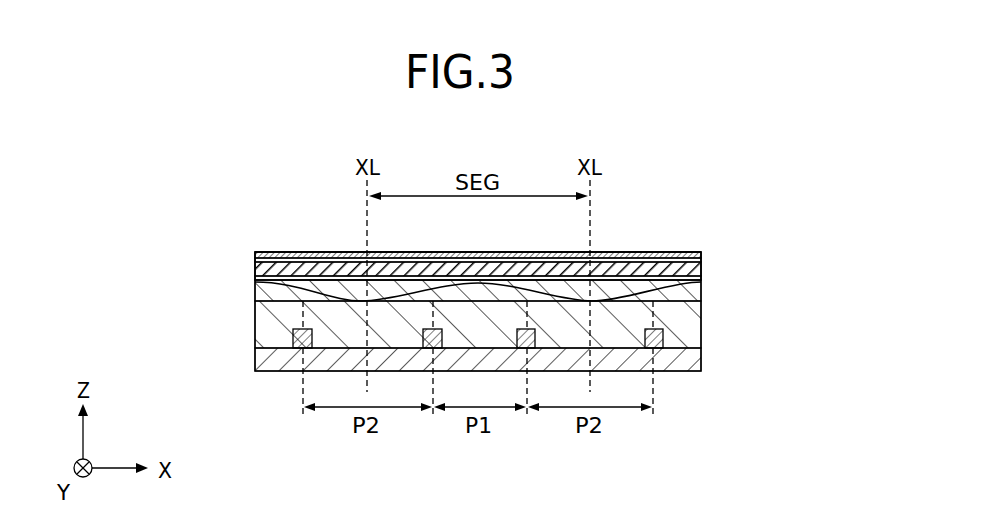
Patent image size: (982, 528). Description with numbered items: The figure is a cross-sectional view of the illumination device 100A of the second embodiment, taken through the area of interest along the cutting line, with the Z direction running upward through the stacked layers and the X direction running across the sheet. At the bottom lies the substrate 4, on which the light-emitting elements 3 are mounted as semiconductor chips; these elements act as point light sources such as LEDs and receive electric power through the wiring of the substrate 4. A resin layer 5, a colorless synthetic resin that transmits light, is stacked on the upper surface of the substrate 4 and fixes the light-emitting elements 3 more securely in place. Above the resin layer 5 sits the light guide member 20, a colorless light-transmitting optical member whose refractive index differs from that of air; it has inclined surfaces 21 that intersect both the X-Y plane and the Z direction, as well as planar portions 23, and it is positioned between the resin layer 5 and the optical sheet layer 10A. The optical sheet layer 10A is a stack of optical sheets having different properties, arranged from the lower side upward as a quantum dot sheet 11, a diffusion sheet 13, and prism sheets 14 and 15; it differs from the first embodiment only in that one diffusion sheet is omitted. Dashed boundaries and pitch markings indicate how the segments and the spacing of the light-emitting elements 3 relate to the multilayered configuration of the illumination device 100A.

The illumination device 100A is at (272, 213).
The optical sheet layer 10A is at (797, 175).
The prism sheet 15 is at (701, 253).
The prism sheet 14 is at (701, 260).
The diffusion sheet 13 is at (701, 268).
The quantum dot (QD) sheet 11 is at (701, 278).
The planar portion 23 is at (346, 253).
The light guide member 20 is at (701, 300).
The inclined surface 21 is at (283, 290).
The resin layer 5 is at (701, 322).
The light-emitting element 3 is at (325, 288).
The substrate 4 is at (701, 362).